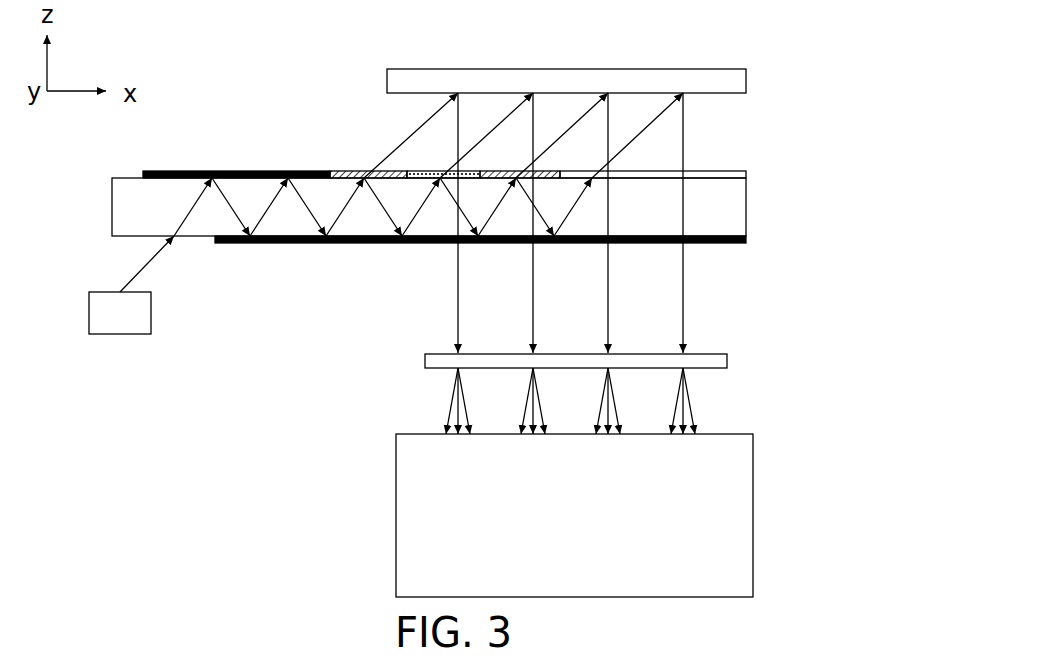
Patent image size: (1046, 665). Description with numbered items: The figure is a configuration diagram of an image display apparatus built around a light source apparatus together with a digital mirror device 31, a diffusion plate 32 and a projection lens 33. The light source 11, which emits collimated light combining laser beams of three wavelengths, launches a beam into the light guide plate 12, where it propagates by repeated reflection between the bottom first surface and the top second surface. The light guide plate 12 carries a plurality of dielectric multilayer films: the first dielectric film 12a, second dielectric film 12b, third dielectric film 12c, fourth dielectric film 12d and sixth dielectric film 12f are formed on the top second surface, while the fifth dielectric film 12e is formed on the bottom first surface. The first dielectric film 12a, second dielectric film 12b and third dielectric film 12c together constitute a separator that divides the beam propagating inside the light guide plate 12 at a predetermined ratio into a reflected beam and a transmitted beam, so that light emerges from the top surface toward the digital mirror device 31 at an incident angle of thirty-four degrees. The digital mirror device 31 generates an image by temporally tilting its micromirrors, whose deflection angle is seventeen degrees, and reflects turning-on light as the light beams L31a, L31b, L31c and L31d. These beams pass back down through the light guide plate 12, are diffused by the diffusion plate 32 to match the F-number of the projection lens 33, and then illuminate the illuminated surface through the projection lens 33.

The light source 11 is at (130, 334).
The light guide plate 12 is at (112, 215).
The first dielectric film 12a is at (340, 172).
The second dielectric film 12b is at (415, 170).
The third dielectric film 12c is at (492, 170).
The fourth dielectric film 12d is at (696, 170).
The fifth dielectric film 12e is at (703, 243).
The sixth dielectric film 12f is at (232, 170).
The digital mirror device 31 is at (582, 68).
The diffusion plate 32 is at (727, 358).
The projection lens 33 is at (753, 535).
The light beam L31a is at (423, 223).
The light beam L31b is at (499, 223).
The light beam L31c is at (574, 223).
The light beam L31d is at (650, 223).